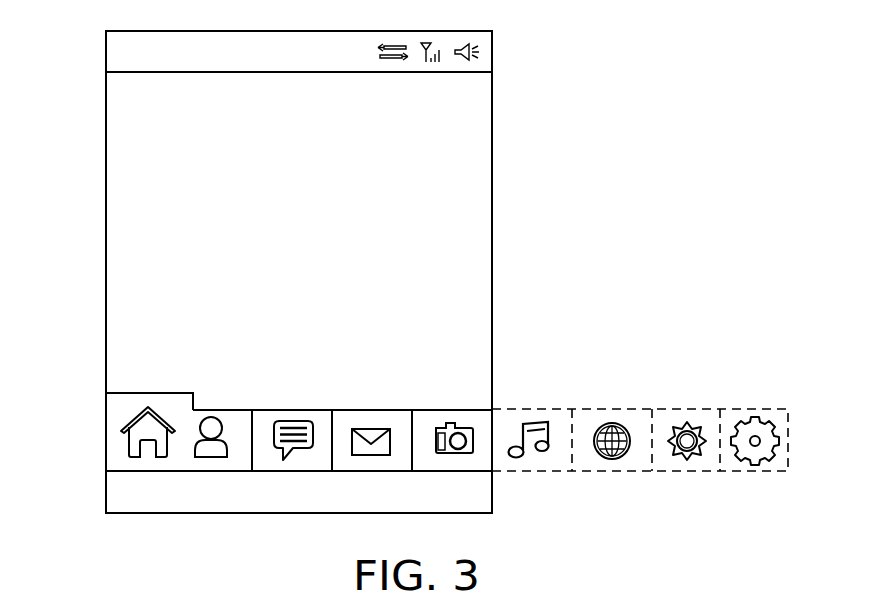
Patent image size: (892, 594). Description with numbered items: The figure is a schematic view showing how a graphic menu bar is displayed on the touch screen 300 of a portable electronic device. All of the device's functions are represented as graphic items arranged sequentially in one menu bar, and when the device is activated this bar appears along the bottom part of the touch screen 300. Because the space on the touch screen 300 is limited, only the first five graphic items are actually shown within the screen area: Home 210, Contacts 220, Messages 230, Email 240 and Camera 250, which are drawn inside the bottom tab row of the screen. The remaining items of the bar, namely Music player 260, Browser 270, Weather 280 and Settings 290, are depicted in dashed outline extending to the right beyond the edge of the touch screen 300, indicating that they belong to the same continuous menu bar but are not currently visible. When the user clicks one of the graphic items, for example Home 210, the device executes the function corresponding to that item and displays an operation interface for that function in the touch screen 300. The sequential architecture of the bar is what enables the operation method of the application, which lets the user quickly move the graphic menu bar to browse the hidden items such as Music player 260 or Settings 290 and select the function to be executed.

The touch screen 300 is at (492, 170).
The Home 210 is at (146, 393).
The Contacts 220 is at (223, 408).
The Messages 230 is at (303, 408).
The Email 240 is at (383, 408).
The Camera 250 is at (463, 408).
The Music player 260 is at (536, 408).
The Browser 270 is at (616, 408).
The Weather 280 is at (686, 408).
The Settings 290 is at (754, 408).